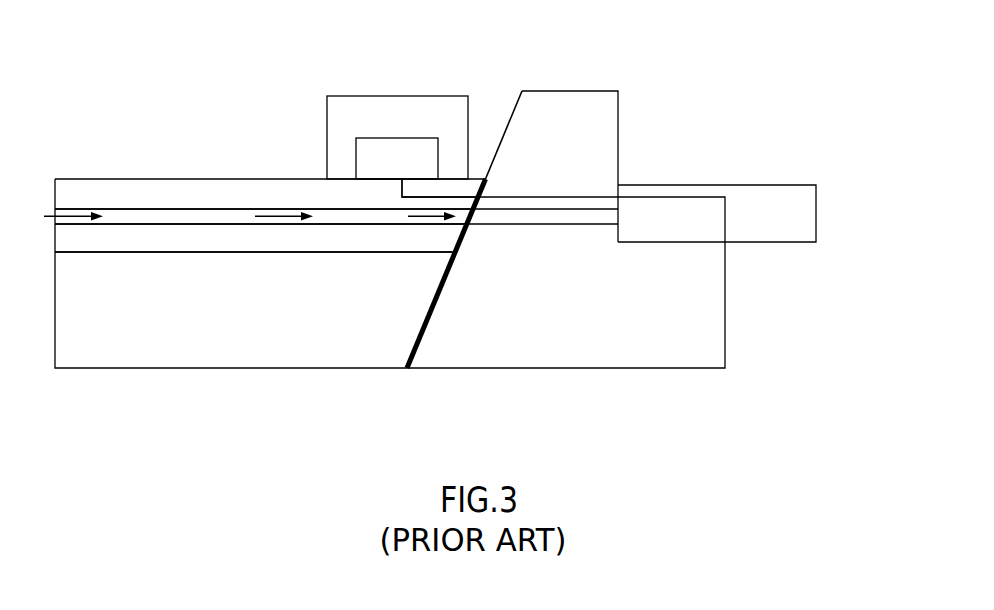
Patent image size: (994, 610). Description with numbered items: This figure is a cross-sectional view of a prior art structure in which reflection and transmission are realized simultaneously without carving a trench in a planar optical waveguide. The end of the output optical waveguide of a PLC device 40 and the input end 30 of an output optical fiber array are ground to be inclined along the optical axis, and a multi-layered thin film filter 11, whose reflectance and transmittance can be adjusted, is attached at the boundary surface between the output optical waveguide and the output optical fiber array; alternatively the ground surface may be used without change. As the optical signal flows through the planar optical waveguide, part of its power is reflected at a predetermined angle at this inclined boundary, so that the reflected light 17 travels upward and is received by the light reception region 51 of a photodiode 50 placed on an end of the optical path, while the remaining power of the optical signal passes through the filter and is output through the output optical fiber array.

The input end of output optical fiber array 30 is at (690, 368).
The PLC device 40 is at (349, 368).
The multi-layered thin film filter 11 is at (433, 310).
The photodiode 50 is at (337, 113).
The light reception region 51 is at (398, 137).
The reflected light 17 is at (447, 207).